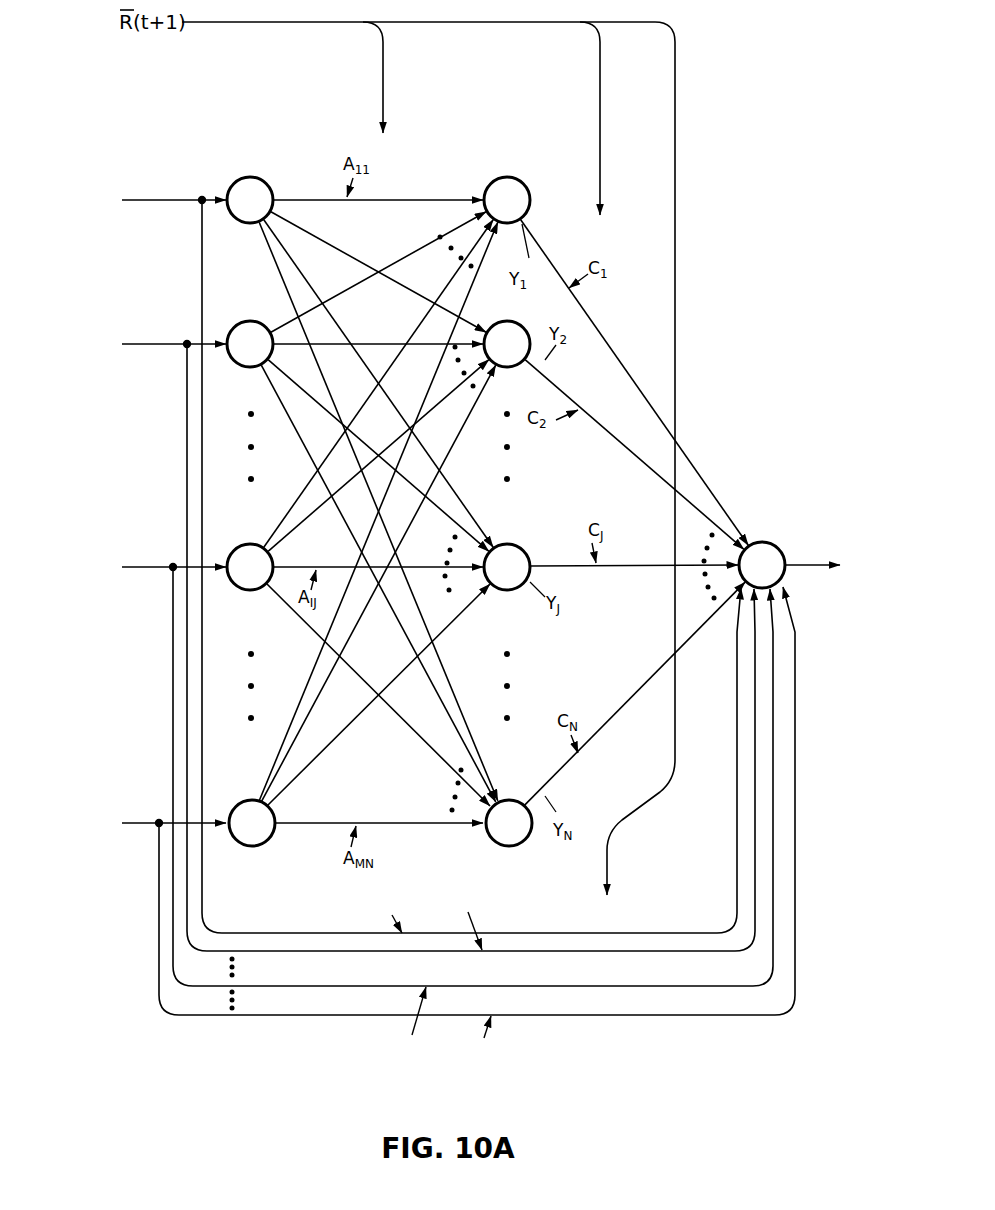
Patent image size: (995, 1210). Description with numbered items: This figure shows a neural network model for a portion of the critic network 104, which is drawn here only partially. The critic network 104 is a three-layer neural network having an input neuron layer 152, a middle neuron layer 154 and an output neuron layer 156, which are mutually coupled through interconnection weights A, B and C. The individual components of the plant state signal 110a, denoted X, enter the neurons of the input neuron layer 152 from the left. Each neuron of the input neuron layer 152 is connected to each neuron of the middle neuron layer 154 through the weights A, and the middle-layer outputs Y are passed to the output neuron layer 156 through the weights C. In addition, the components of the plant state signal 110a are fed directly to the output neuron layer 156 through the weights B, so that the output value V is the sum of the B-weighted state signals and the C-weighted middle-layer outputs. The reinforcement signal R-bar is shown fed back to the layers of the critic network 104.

The input neuron layer 152 is at (282, 161).
The middle neuron layer 154 is at (472, 161).
The output neuron layer 156 is at (728, 495).
The plant state signal 110a is at (120, 182).
The critic network 104 is at (247, 1057).